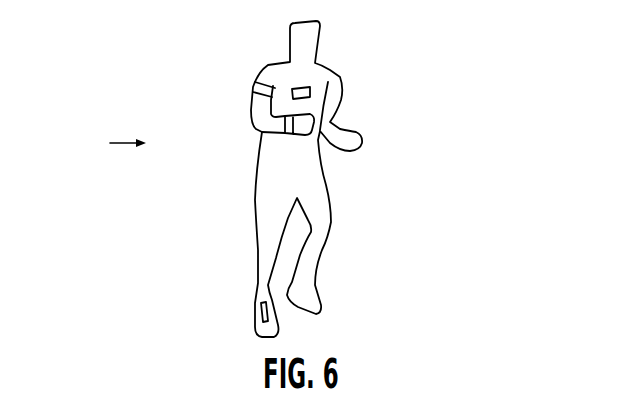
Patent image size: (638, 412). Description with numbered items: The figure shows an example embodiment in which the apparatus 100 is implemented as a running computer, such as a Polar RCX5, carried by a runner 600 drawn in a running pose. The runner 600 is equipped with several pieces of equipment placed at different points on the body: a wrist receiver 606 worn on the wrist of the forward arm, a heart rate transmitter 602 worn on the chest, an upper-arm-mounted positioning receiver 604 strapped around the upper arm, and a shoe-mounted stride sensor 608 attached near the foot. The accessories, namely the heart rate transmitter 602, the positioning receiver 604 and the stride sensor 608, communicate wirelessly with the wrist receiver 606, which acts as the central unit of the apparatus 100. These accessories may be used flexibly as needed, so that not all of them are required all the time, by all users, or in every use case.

The apparatus 100 is at (111, 143).
The runner 600 is at (290, 22).
The heart rate transmitter 602 is at (307, 88).
The upper-arm-mounted positioning receiver 604 is at (256, 83).
The wrist receiver 606 is at (293, 134).
The shoe-mounted stride sensor 608 is at (259, 308).